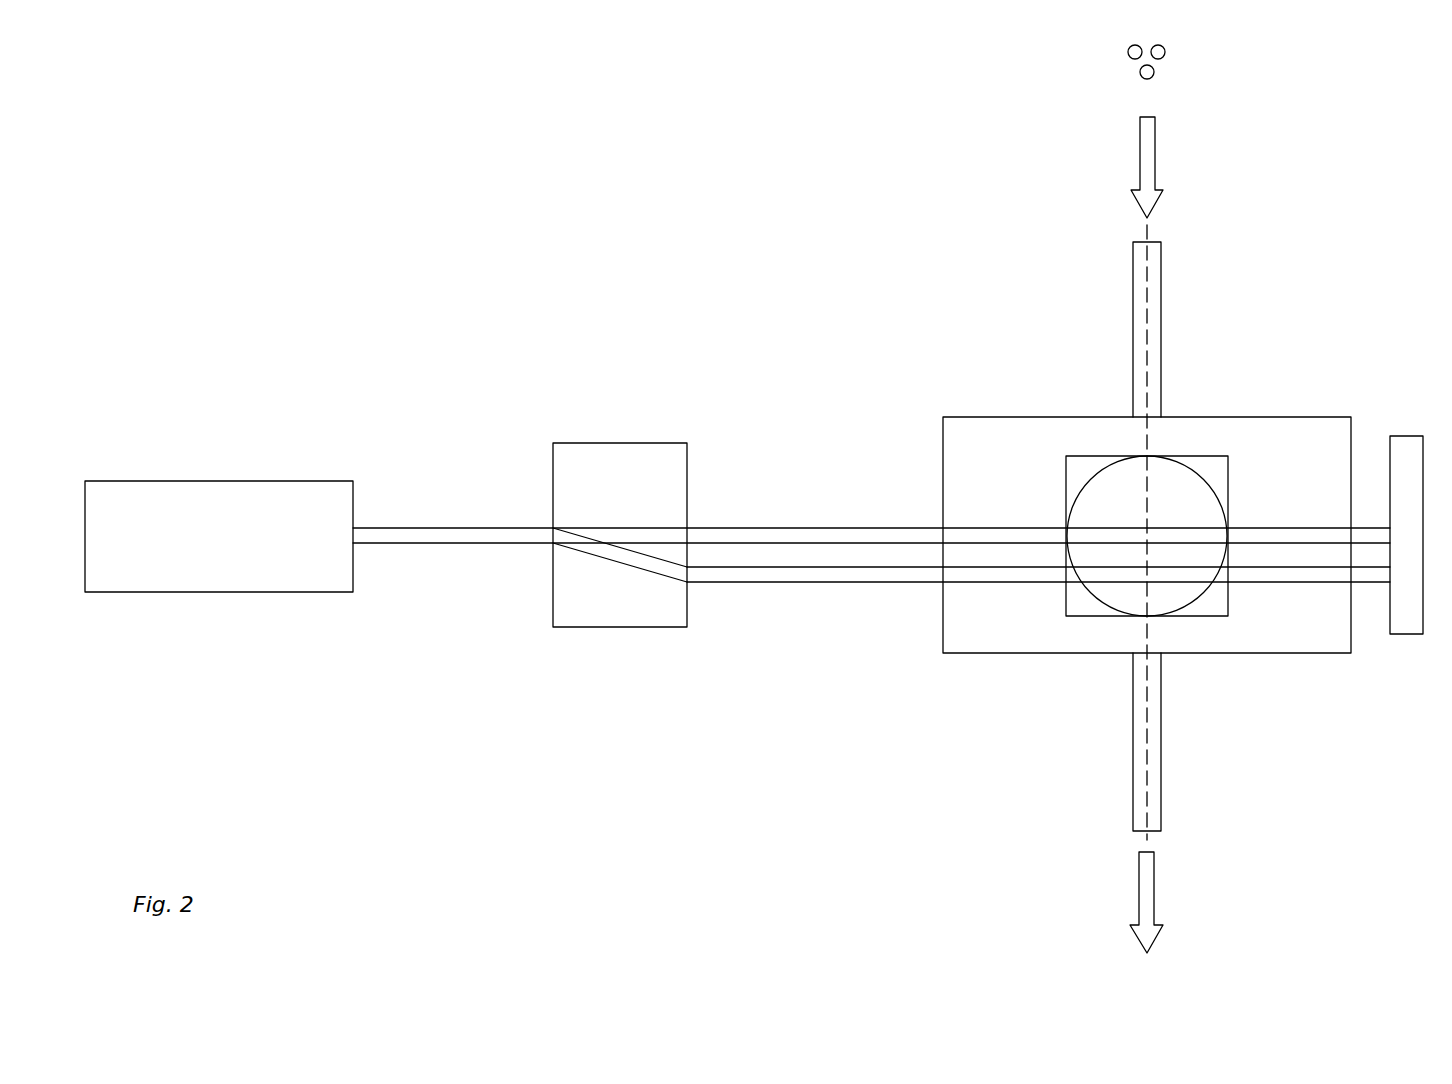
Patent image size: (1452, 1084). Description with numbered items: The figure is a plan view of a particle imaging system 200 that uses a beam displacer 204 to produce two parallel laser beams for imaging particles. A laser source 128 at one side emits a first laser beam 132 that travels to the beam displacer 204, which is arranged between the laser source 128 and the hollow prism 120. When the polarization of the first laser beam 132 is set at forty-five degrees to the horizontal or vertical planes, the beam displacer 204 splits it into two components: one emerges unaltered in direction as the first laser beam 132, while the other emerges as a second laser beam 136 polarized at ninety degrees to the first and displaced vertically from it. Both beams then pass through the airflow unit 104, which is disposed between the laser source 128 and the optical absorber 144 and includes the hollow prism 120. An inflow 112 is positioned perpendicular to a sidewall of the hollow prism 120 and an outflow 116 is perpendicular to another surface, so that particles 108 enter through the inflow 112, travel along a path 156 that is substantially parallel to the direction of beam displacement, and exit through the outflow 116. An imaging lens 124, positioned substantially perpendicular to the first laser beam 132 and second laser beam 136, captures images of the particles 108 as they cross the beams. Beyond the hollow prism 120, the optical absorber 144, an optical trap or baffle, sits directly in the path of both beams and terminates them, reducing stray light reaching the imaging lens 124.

The particle imaging system 200 is at (298, 119).
The particles 108 is at (1105, 53).
The path 156 is at (1155, 150).
The airflow unit 104 is at (1288, 298).
The inflow 112 is at (1133, 324).
The outflow 116 is at (1133, 748).
The hollow prism 120 is at (1300, 416).
The imaging lens 124 is at (1208, 588).
The optical absorber 144 is at (1408, 436).
The laser source 128 is at (241, 552).
The beam displacer 204 is at (618, 443).
The first laser beam 132 is at (805, 528).
The second laser beam 136 is at (833, 583).